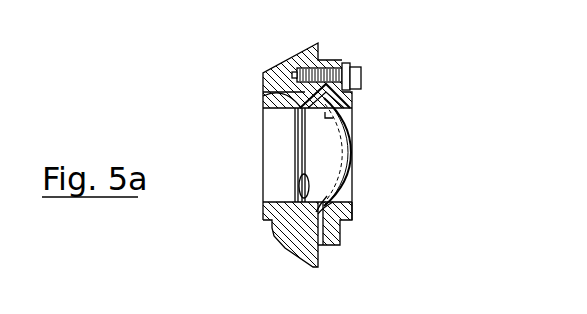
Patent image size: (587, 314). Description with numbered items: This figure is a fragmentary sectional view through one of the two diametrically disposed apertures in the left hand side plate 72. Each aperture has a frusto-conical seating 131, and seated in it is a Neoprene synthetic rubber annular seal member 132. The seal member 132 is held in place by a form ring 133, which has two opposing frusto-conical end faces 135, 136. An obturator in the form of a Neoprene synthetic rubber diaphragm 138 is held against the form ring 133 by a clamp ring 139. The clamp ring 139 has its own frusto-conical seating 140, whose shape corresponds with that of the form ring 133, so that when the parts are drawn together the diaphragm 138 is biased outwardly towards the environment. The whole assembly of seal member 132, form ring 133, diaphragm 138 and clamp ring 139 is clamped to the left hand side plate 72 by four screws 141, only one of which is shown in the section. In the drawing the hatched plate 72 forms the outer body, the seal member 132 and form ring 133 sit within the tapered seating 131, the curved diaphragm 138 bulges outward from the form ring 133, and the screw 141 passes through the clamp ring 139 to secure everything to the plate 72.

The left hand side plate 72 is at (266, 73).
The frusto-conical seating 131 is at (262, 97).
The annular seal member 132 is at (295, 120).
The form ring 133 is at (333, 118).
The frusto-conical end face 135 is at (300, 176).
The frusto-conical end face 136 is at (340, 236).
The diaphragm 138 is at (350, 147).
The clamp ring 139 is at (333, 62).
The frusto-conical seating 140 is at (340, 201).
The screw 141 is at (358, 64).